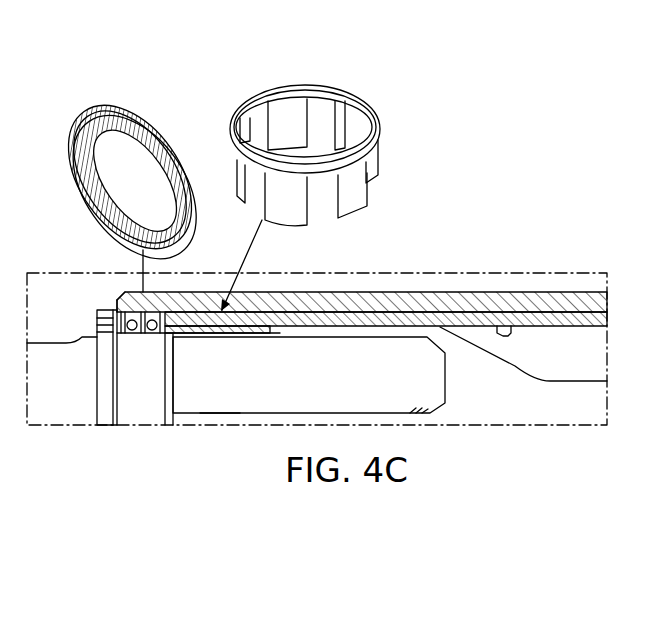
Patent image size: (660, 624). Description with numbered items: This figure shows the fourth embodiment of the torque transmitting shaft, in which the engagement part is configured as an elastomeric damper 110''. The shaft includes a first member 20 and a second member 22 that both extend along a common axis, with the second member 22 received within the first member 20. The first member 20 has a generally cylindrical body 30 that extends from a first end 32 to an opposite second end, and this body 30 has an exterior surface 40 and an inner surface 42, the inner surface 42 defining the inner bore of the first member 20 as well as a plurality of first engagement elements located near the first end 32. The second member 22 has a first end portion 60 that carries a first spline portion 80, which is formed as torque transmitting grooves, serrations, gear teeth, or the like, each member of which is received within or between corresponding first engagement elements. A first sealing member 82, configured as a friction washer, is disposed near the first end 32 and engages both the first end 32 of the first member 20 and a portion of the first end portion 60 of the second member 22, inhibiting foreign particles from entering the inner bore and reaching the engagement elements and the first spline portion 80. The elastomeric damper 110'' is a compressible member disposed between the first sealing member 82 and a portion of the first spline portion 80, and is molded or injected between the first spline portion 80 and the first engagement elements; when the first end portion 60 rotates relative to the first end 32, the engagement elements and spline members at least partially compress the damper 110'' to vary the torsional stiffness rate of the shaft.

The first member 20 is at (568, 270).
The second member 22 is at (512, 412).
The body 30 is at (443, 297).
The first end 32 is at (116, 300).
The exterior surface 40 is at (370, 290).
The inner surface 42 is at (498, 320).
The first end portion 60 is at (283, 392).
The first spline portion 80 is at (213, 405).
The first sealing member 82 is at (164, 124).
The elastomeric damper 110'' is at (261, 178).